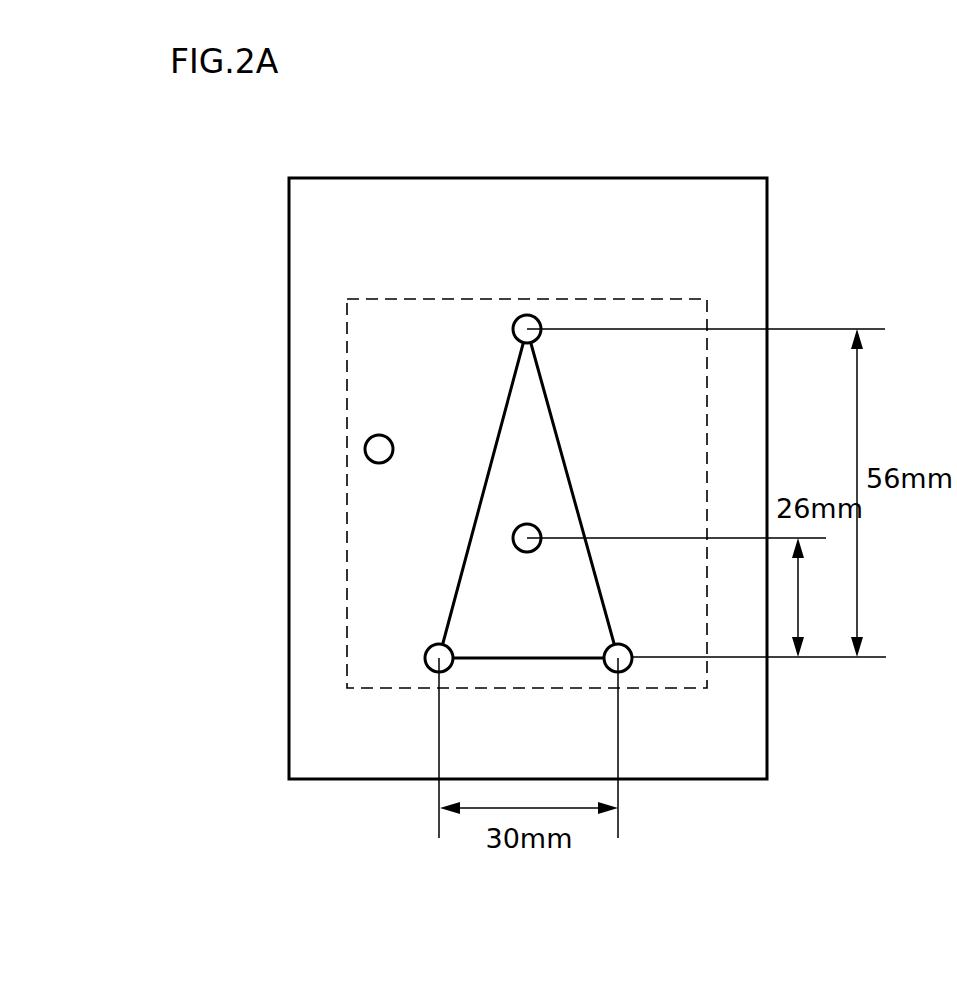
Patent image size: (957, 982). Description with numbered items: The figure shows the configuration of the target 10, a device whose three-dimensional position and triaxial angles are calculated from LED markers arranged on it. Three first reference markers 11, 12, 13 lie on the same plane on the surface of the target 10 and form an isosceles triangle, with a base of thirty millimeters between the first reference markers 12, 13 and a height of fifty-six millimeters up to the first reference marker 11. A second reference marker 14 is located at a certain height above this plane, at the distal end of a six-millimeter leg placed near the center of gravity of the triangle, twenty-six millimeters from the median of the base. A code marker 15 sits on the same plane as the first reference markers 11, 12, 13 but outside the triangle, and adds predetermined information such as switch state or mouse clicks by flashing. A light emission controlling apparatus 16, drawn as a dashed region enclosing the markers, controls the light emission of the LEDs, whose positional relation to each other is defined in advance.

The target 10 is at (288, 209).
The first reference marker 11 is at (516, 320).
The first reference marker 12 is at (612, 672).
The first reference marker 13 is at (436, 672).
The second reference marker 14 is at (513, 542).
The code marker 15 is at (365, 450).
The light emission controlling apparatus 16 is at (343, 360).